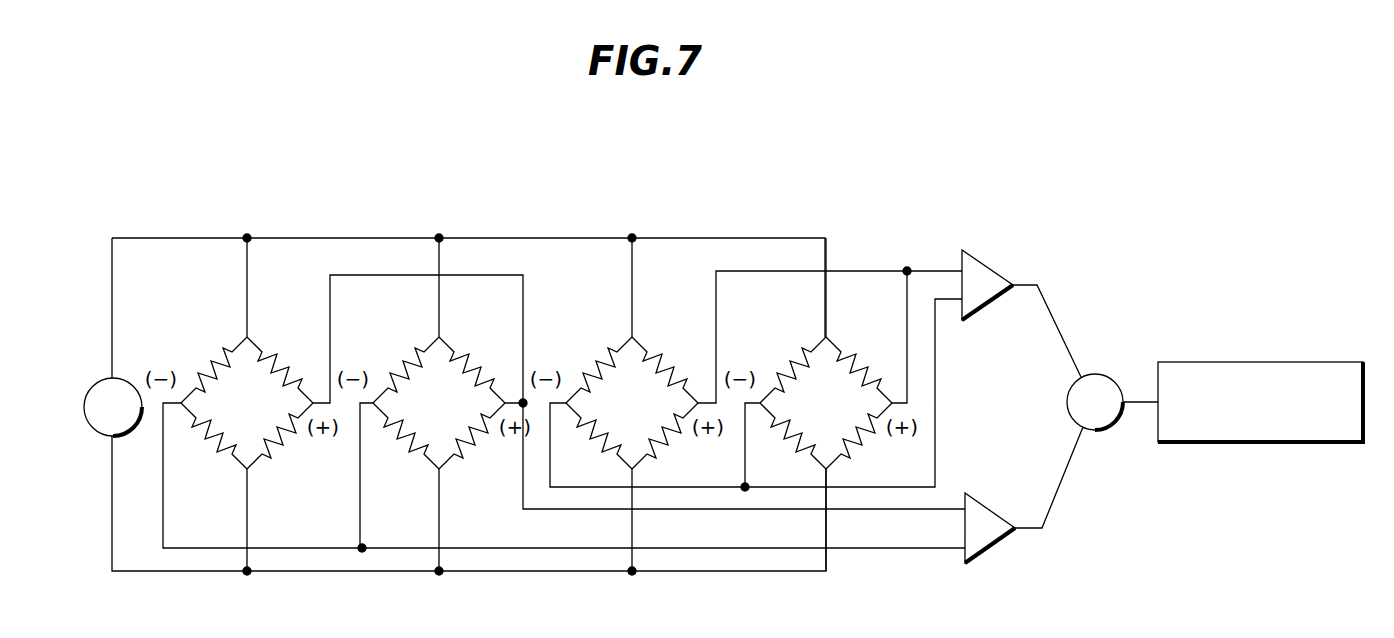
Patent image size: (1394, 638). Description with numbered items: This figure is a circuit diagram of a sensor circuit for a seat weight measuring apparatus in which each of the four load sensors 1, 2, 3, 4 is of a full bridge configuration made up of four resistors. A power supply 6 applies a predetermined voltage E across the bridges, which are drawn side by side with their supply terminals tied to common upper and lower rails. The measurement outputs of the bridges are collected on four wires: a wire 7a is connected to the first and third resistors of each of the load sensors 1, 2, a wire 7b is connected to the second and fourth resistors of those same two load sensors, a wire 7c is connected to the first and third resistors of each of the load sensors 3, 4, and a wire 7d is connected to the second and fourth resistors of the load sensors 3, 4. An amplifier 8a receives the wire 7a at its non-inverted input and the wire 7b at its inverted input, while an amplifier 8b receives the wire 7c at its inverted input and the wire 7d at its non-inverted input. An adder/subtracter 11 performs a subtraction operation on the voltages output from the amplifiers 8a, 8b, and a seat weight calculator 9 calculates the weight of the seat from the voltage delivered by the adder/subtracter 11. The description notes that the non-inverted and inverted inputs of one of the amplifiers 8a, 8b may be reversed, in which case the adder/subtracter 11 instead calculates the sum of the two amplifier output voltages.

The load sensor 1 is at (275, 228).
The load sensor 2 is at (455, 228).
The load sensor 3 is at (644, 228).
The load sensor 4 is at (827, 228).
The power supply 6 is at (90, 388).
The wire 7a is at (944, 509).
The wire 7b is at (892, 548).
The wire 7c is at (938, 270).
The wire 7d is at (935, 328).
The amplifier 8a is at (972, 497).
The amplifier 8b is at (970, 255).
The seat weight calculator 9 is at (1218, 362).
The adder/subtracter 11 is at (1115, 380).